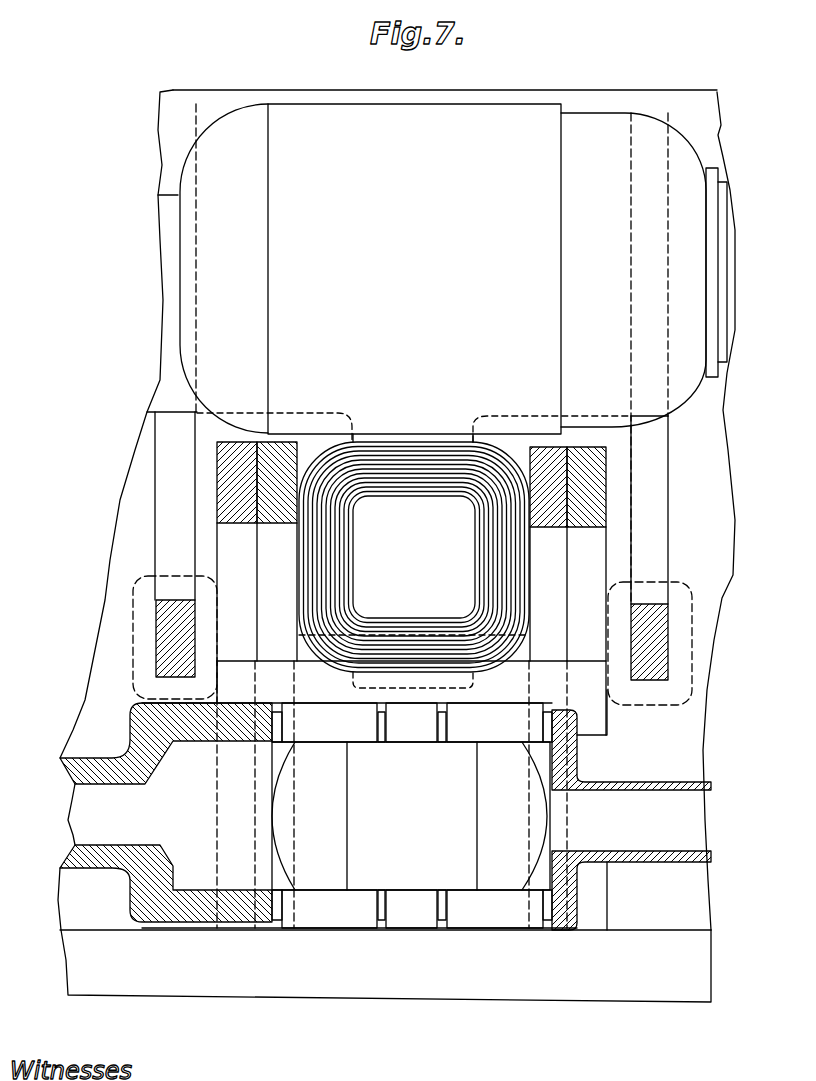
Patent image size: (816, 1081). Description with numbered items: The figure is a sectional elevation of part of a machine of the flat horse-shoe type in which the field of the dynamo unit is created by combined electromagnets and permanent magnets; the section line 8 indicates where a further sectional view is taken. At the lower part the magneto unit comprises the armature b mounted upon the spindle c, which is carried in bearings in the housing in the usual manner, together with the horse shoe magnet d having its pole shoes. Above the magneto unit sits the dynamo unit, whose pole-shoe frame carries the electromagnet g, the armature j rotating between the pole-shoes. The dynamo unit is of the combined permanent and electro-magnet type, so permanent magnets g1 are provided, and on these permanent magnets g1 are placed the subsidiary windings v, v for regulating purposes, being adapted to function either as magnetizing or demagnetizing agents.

The section line 8- 8 is at (414, 145).
The armature j is at (437, 354).
The horse shoe magnet d is at (224, 446).
The electromagnet g is at (520, 603).
The permanent magnets g1 is at (686, 556).
The subsidiary windings v is at (140, 677).
The armature b is at (359, 815).
The spindle c is at (631, 820).